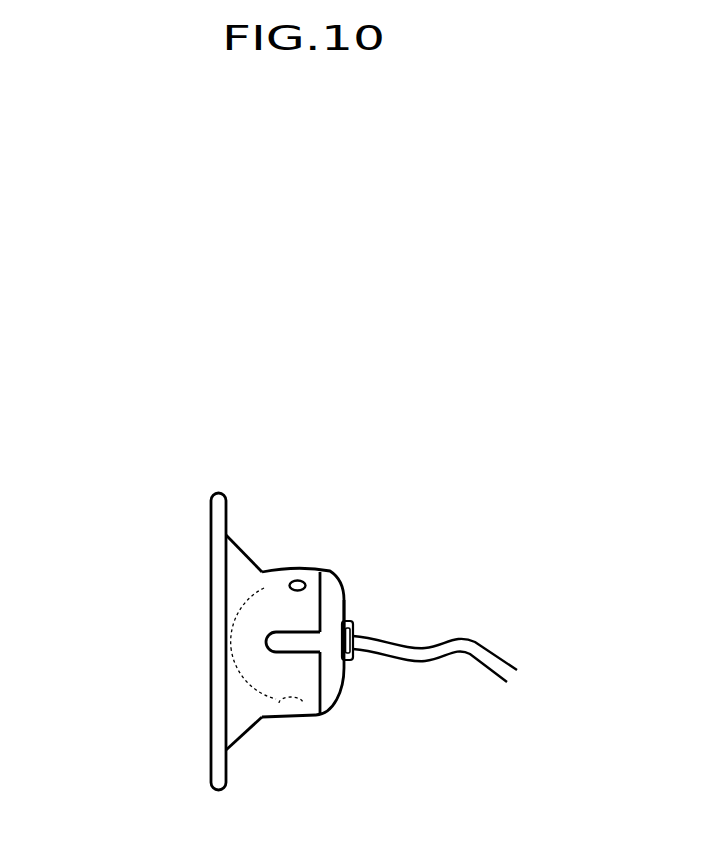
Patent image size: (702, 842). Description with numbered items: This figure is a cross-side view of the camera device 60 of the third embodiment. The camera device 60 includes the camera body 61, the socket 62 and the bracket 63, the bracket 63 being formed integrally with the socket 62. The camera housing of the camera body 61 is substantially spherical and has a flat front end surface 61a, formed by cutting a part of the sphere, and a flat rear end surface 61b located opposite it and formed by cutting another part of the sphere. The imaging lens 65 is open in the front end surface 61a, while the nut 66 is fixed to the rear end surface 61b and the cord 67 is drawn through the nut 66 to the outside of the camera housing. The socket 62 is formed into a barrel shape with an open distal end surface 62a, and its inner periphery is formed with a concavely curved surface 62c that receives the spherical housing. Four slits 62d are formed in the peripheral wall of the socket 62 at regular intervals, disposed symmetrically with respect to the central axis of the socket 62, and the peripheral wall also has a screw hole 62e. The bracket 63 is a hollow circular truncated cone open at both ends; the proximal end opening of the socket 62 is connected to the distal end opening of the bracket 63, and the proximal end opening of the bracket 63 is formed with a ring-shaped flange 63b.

The camera device 60 is at (399, 488).
The camera body 61 is at (340, 598).
The front end surface 61a is at (238, 679).
The rear end surface 61b is at (342, 614).
The socket 62 is at (291, 576).
The distal end surface 62a is at (302, 643).
The concavely curved surface 62c is at (297, 706).
The slits 62d is at (342, 673).
The screw hole 62e is at (302, 580).
The bracket 63 is at (243, 567).
The ring-shaped flange 63b is at (212, 768).
The imaging lens 65 is at (240, 638).
The nut 66 is at (352, 664).
The cord 67 is at (508, 660).